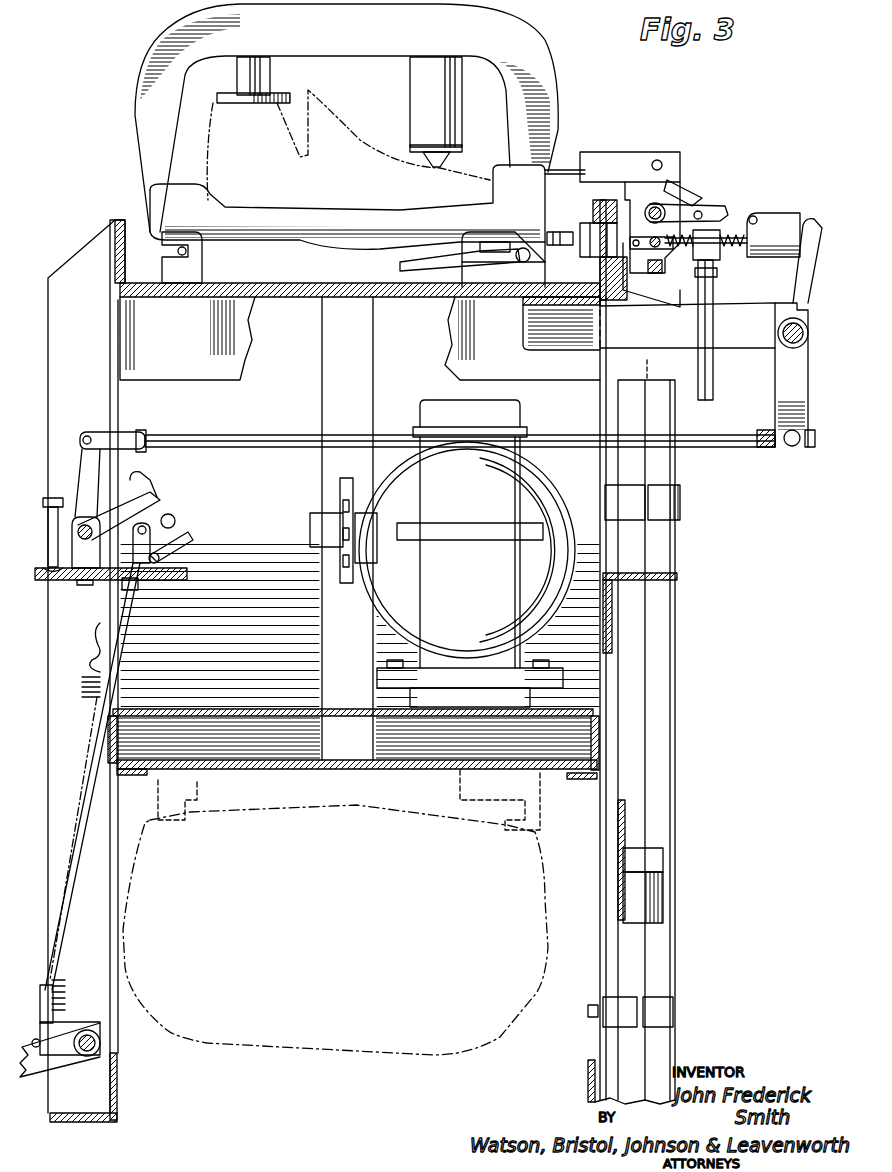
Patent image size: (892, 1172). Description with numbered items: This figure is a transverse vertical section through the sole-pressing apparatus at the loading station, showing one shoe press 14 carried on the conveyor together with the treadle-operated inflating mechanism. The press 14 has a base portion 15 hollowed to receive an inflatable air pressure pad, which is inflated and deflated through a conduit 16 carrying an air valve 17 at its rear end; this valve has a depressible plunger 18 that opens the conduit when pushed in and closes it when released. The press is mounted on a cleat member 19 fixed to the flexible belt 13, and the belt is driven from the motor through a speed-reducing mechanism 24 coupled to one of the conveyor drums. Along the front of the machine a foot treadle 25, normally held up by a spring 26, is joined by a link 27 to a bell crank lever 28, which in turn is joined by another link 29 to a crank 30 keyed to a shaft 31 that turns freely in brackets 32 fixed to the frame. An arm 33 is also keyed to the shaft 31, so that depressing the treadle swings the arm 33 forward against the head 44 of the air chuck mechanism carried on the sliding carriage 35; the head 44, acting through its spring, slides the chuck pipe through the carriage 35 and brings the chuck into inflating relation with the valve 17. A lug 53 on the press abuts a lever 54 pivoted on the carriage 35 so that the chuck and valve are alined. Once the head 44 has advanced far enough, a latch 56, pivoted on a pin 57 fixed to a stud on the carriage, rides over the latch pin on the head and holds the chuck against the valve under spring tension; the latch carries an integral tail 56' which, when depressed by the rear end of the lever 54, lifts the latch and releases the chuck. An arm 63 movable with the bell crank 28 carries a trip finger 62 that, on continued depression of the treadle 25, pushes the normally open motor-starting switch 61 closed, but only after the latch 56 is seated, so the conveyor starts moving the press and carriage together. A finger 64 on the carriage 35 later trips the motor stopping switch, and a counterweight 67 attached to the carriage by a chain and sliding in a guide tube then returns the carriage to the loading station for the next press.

The belt 13 is at (255, 300).
The shoe press 14 is at (540, 96).
The base portion 15 is at (317, 238).
The conduit 16 is at (413, 263).
The valve 17 is at (557, 232).
The depressible plunger 18 is at (578, 223).
The cleat member 19 is at (243, 283).
The speed-reducing mechanism 24 is at (442, 553).
The foot treadle 25 is at (53, 1057).
The spring 26 is at (85, 680).
The link 27 is at (108, 608).
The bell crank lever 28 is at (87, 473).
The link 29 is at (273, 432).
The crank 30 is at (783, 393).
The shaft 31 is at (783, 341).
The bracket 32 is at (751, 293).
The arm 33 is at (790, 305).
The sliding carriage 35 is at (633, 272).
The head 44 is at (775, 226).
The lug 53 is at (560, 168).
The lever 54 is at (610, 153).
The latch 56 is at (702, 198).
The tail 56' is at (694, 168).
The pin 57 is at (702, 211).
The motor-starting switch 61 is at (187, 540).
The trip finger 62 is at (176, 520).
The arm 63 is at (153, 477).
The finger 64 is at (660, 248).
The counterweight 67 is at (640, 898).